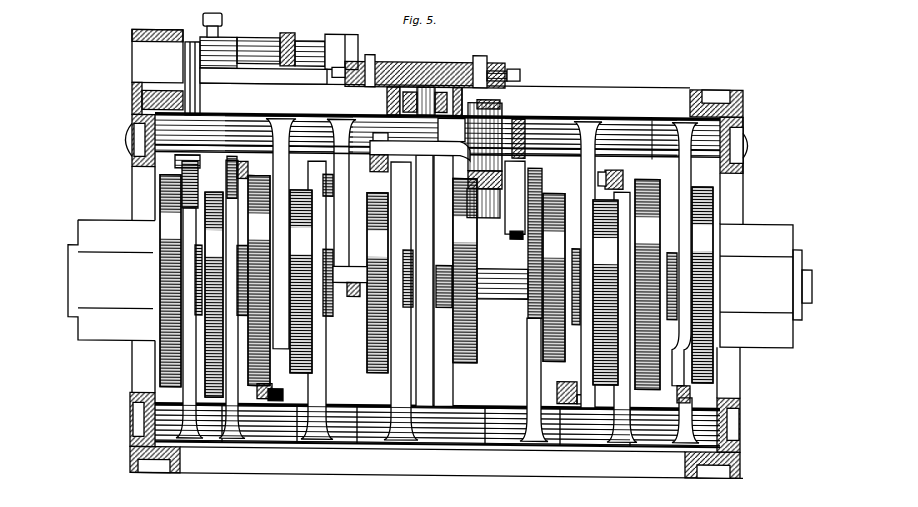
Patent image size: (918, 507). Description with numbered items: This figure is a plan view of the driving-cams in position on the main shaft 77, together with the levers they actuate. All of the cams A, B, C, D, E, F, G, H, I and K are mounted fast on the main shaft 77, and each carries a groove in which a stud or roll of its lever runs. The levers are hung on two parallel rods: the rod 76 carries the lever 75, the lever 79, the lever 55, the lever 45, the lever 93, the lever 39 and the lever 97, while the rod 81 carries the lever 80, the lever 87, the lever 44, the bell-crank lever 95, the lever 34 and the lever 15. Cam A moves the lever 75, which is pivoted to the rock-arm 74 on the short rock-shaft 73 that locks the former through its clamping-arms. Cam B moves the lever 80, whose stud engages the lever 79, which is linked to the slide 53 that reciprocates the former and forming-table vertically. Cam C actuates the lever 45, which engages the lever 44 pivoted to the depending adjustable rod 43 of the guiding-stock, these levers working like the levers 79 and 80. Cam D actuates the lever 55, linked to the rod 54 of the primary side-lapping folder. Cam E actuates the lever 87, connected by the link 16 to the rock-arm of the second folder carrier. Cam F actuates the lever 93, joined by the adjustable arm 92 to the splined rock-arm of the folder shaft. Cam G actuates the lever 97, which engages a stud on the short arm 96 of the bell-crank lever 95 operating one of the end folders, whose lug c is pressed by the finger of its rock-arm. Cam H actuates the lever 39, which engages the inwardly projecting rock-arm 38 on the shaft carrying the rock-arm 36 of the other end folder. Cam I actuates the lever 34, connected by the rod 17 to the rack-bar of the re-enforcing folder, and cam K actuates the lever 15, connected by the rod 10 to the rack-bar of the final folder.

The rod 10 is at (257, 387).
The lever 15 is at (254, 257).
The link 16 is at (690, 392).
The rod 17 is at (566, 378).
The lever 34 is at (627, 262).
The rock-arm 36 is at (310, 53).
The rock-arm 38 is at (200, 91).
The lever 39 is at (188, 302).
The adjustable rod 43 is at (353, 297).
The lever 44 is at (319, 199).
The lever 45 is at (327, 302).
The slide 53 is at (433, 62).
The rod 54 is at (248, 168).
The lever 55 is at (258, 299).
The rock-shaft 73 is at (500, 104).
The rock-arm 74 is at (420, 157).
The lever 75 is at (398, 303).
The rod 76 is at (675, 427).
The main shaft 77 is at (500, 255).
The lever 79 is at (450, 300).
The lever 80 is at (449, 262).
The rod 81 is at (388, 137).
The lever 87 is at (683, 283).
The adjustable arm 92 is at (610, 187).
The lever 93 is at (628, 196).
The bell-crank lever 95 is at (542, 136).
The short arm 96 is at (500, 220).
The lever 97 is at (398, 241).
The cam A is at (377, 283).
The cam B is at (465, 271).
The cam C is at (301, 281).
The cam D is at (214, 294).
The cam E is at (702, 285).
The cam F is at (647, 284).
The cam G is at (554, 277).
The cam H is at (170, 281).
The cam I is at (605, 292).
The cam K is at (259, 280).
The lug c is at (515, 200).